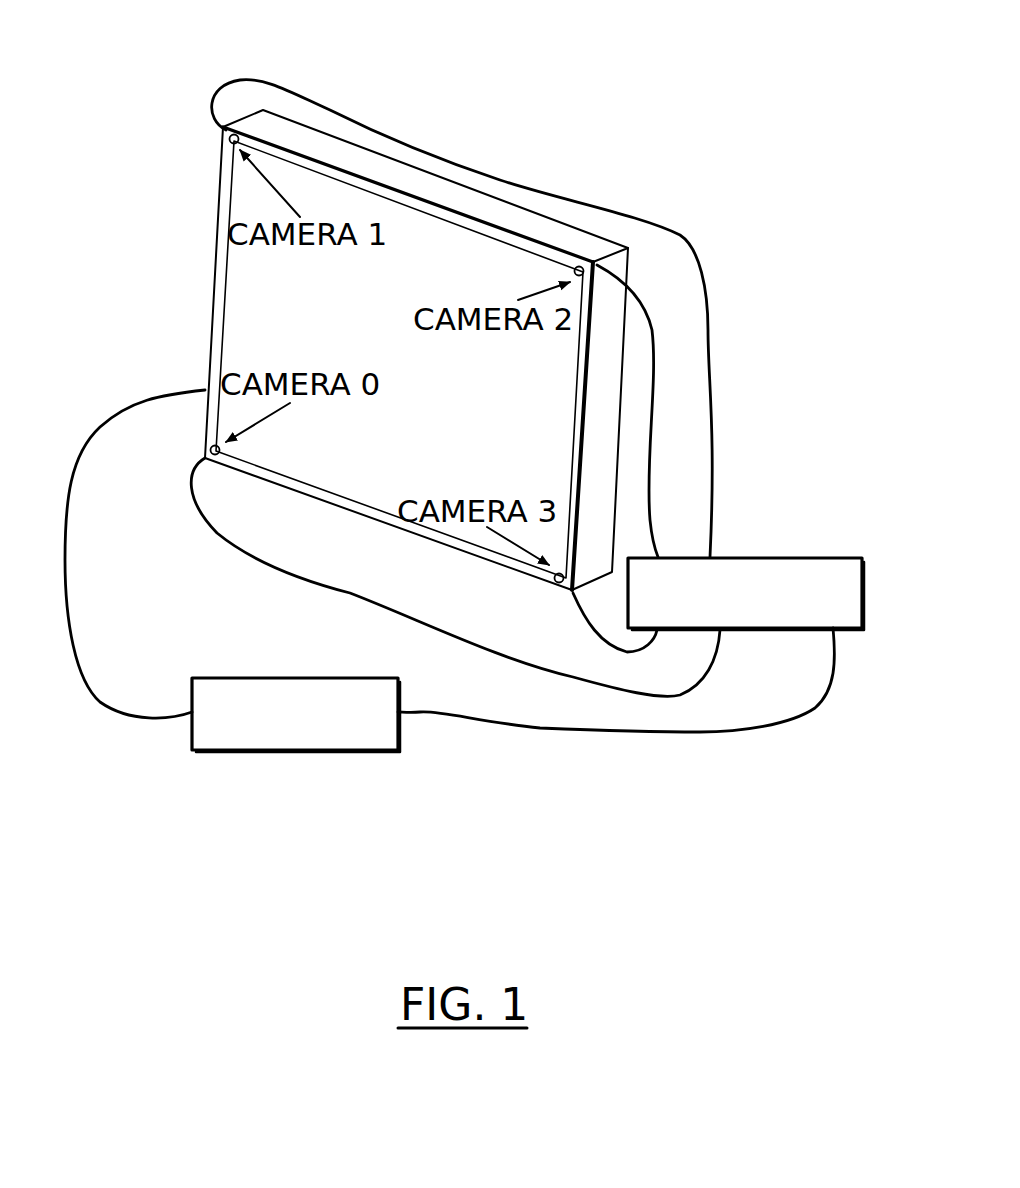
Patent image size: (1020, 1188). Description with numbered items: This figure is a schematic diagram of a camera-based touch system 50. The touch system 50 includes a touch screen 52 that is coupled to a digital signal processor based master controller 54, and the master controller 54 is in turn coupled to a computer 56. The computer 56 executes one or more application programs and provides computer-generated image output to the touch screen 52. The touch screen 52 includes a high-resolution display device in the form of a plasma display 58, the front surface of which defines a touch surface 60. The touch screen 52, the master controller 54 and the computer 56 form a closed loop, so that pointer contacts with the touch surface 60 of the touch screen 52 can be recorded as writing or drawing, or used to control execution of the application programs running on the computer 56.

The camera-based touch system 50 is at (738, 180).
The touch screen 52 is at (540, 236).
The master controller 54 is at (781, 560).
The computer 56 is at (309, 752).
The plasma display 58 is at (597, 449).
The touch surface 60 is at (486, 429).